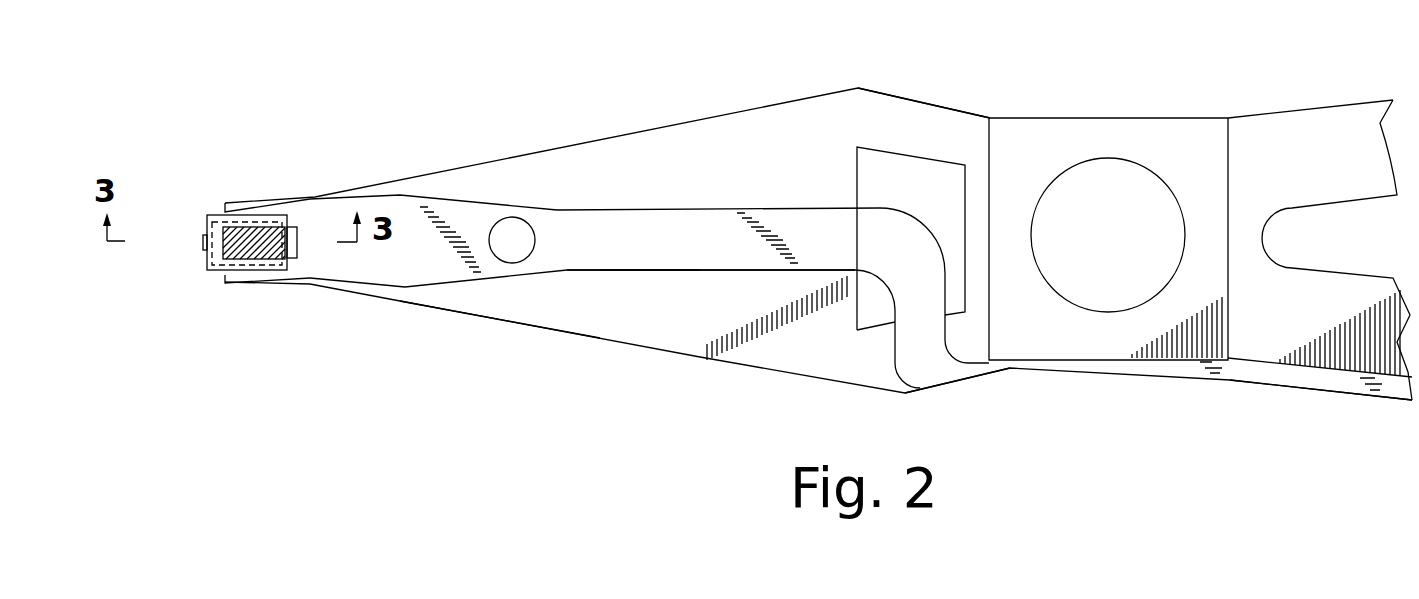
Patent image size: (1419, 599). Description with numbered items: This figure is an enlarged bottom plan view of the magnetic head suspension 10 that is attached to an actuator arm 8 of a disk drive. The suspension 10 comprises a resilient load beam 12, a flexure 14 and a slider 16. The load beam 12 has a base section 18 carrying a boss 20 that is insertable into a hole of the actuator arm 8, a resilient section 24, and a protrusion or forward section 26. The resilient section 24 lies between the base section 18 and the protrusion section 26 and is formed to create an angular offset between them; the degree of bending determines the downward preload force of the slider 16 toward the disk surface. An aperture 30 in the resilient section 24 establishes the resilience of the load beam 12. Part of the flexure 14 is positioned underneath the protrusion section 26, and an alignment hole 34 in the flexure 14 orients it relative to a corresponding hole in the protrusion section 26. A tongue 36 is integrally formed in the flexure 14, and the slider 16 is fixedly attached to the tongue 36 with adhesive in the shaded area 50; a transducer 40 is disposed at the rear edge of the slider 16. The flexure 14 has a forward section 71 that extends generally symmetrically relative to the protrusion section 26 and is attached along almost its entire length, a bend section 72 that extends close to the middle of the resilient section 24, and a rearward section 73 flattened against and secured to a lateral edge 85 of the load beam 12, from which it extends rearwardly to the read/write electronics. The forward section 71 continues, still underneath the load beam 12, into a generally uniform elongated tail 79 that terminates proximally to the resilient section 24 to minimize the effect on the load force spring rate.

The actuator arm 8 is at (1284, 177).
The magnetic head suspension 10 is at (986, 404).
The load beam 12 is at (611, 131).
The flexure 14 is at (712, 186).
The slider 16 is at (207, 262).
The base section 18 is at (1068, 117).
The boss 20 is at (1105, 165).
The resilient section 24 is at (893, 110).
The protrusion section 26 is at (528, 322).
The aperture 30 is at (917, 178).
The alignment hole 34 is at (510, 232).
The tongue 36 is at (275, 243).
The transducer 40 is at (203, 238).
The shaded area 50 is at (263, 230).
The forward section 71 is at (648, 283).
The bend section 72 is at (910, 338).
The rearward section 73 is at (1107, 370).
The tail 79 is at (610, 258).
The lateral edge 85 is at (1322, 368).